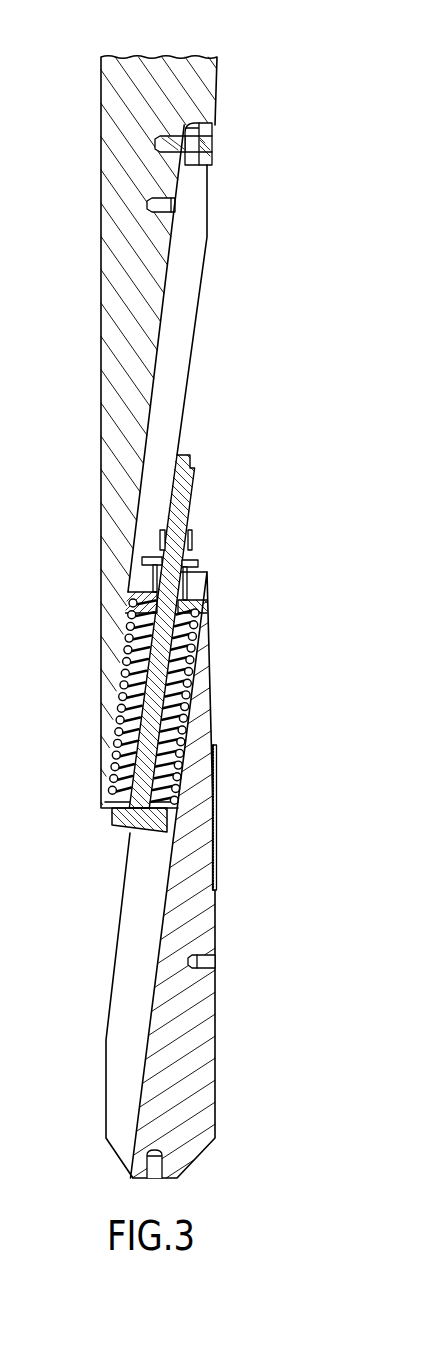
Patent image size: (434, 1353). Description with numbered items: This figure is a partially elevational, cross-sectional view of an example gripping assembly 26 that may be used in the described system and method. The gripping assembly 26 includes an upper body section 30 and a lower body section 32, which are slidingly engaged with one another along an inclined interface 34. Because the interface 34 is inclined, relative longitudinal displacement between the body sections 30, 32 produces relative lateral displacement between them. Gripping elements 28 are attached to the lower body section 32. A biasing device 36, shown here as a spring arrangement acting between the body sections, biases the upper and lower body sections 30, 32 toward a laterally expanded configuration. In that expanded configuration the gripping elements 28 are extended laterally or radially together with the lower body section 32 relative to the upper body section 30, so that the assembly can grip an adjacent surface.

The gripping assembly 26 is at (266, 82).
The gripping elements 28 is at (218, 760).
The upper body section 30 is at (100, 143).
The lower body section 32 is at (218, 1013).
The inclined interface 34 is at (192, 363).
The biasing device 36 is at (197, 655).